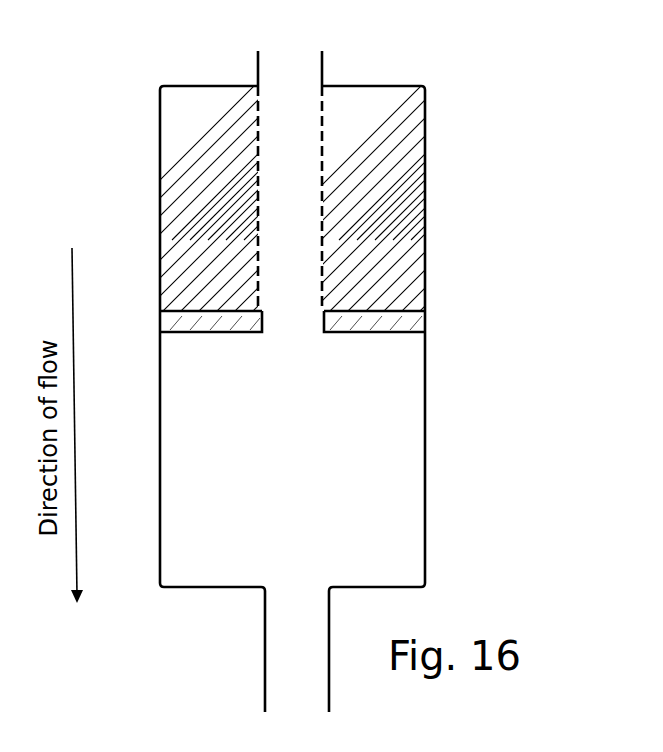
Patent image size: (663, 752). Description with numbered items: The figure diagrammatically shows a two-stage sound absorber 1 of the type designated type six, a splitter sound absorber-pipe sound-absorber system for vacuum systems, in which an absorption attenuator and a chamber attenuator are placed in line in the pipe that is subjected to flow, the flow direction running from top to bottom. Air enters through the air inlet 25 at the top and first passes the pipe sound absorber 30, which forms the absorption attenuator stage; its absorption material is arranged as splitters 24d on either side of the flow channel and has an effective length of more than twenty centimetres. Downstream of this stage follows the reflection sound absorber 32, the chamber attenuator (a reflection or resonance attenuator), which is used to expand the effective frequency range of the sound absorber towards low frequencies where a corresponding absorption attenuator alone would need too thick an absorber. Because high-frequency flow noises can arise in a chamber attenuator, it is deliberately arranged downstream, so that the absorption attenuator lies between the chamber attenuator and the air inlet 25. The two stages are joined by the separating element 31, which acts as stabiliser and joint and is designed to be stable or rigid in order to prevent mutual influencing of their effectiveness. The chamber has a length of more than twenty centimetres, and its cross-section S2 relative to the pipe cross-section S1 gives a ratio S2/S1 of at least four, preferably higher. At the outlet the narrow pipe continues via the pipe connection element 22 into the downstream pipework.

The sound absorber 1 is at (456, 239).
The pipe connection element 22 is at (264, 640).
The splitters 24d is at (400, 204).
The air inlet 25 is at (291, 62).
The pipe sound absorber 30 is at (553, 84).
The separating element 31 is at (427, 320).
The reflection sound absorber 32 is at (556, 325).
The cross-section of the pipe S1 is at (326, 623).
The cross-section of the chamber attenuator S2 is at (419, 509).